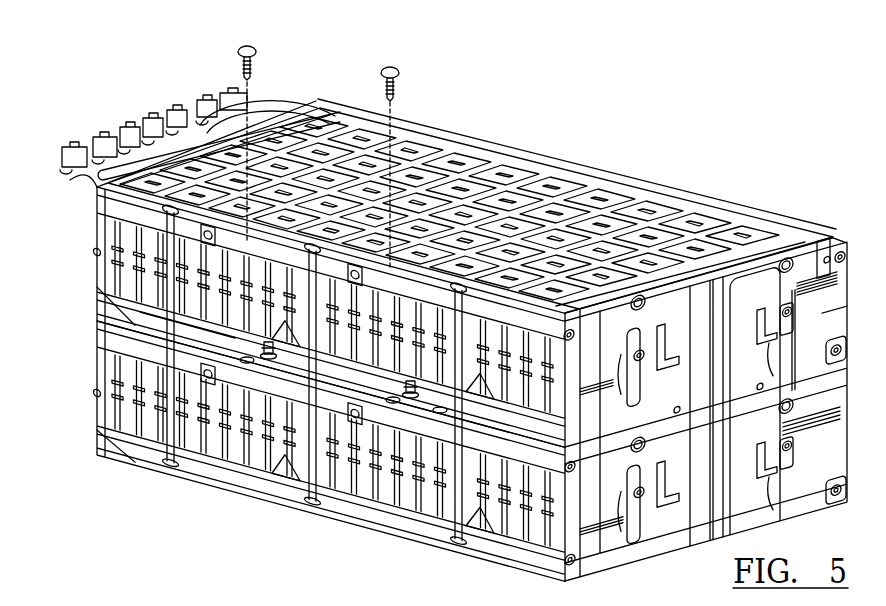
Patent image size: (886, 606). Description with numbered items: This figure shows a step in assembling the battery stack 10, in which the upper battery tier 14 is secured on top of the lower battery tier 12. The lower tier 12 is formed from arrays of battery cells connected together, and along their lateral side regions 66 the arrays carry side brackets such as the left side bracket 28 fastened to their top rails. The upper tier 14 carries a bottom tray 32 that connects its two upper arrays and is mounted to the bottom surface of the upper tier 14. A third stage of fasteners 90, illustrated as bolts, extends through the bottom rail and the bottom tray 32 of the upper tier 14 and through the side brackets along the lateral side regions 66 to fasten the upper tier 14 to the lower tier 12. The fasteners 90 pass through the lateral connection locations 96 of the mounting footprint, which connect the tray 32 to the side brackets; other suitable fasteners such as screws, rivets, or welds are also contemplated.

The battery stack 10 is at (721, 115).
The lower battery tier 12 is at (95, 372).
The upper battery tier 14 is at (95, 239).
The left side bracket 28 is at (236, 362).
The bottom tray 32 is at (428, 413).
The lateral side regions 66 is at (213, 340).
The fasteners 90 is at (256, 54).
The lateral connection locations 96 is at (393, 403).